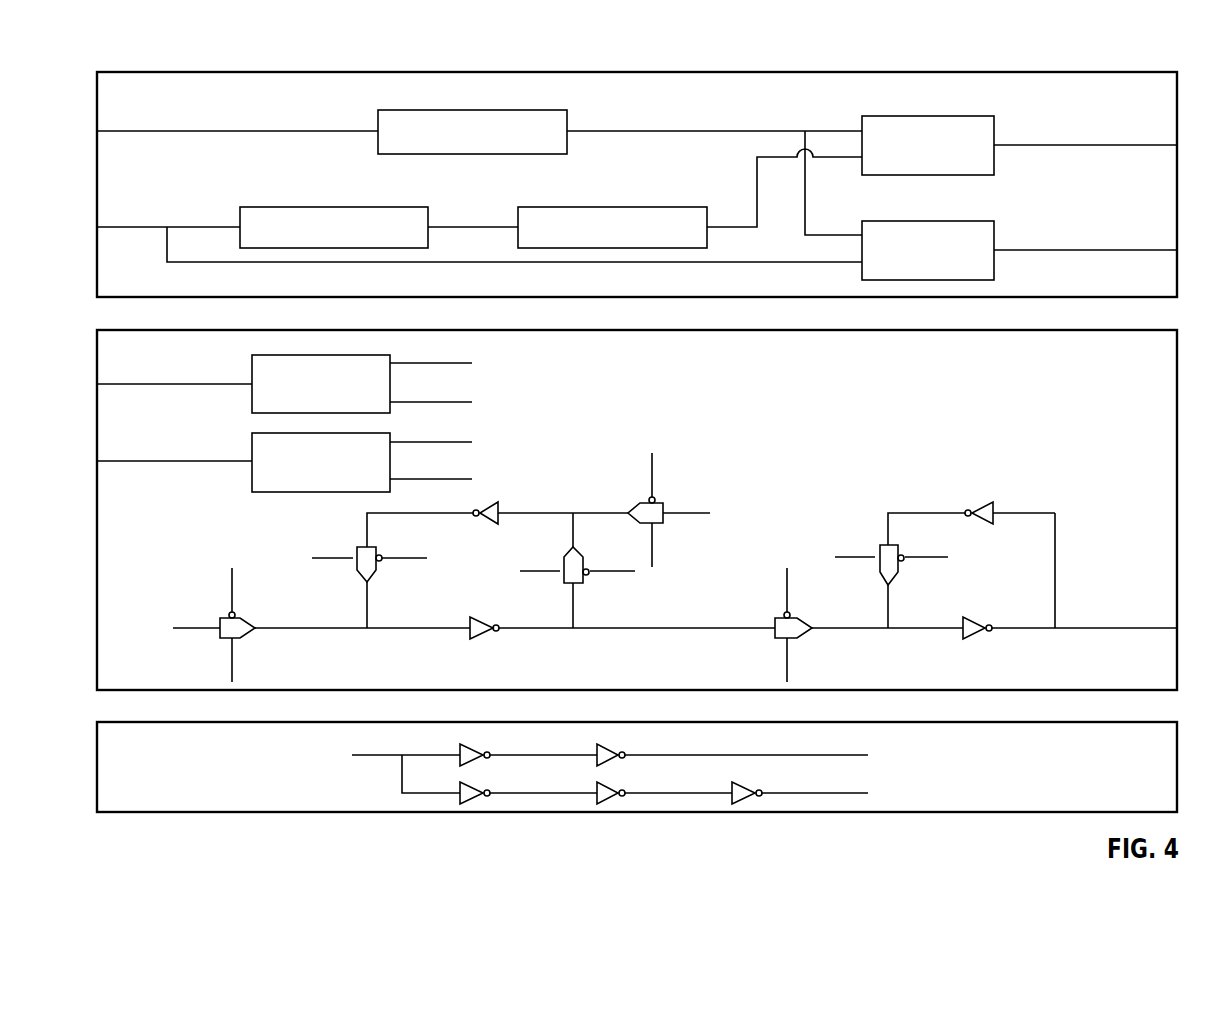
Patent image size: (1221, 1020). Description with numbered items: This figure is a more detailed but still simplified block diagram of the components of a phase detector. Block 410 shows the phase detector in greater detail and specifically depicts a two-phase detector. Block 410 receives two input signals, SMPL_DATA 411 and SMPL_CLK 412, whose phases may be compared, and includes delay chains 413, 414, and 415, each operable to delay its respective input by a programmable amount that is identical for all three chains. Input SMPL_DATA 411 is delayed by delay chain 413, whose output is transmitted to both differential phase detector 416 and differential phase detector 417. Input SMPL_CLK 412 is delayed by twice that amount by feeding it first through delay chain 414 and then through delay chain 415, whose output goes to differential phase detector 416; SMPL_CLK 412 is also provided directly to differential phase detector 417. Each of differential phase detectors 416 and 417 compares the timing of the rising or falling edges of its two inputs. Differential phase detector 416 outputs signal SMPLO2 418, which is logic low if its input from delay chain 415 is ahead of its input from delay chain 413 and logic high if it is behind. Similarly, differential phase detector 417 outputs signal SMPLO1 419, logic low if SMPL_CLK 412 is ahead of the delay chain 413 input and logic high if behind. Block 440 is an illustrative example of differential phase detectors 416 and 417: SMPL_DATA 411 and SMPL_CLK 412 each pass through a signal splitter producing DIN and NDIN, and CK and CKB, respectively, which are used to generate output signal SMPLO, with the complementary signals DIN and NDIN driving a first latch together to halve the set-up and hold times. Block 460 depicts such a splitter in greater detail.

The block 410 is at (1122, 72).
The SMPL_DATA 411 is at (202, 96).
The SMPL_CLK 412 is at (160, 186).
The delay chain 413 is at (435, 108).
The delay chain 414 is at (298, 203).
The delay chain 415 is at (574, 203).
The differential phase detector 416 is at (918, 113).
The differential phase detector 417 is at (918, 218).
The SMPLO2 418 is at (1084, 113).
The SMPLO1 419 is at (1084, 216).
The block 440 is at (1122, 330).
The block 460 is at (1118, 722).